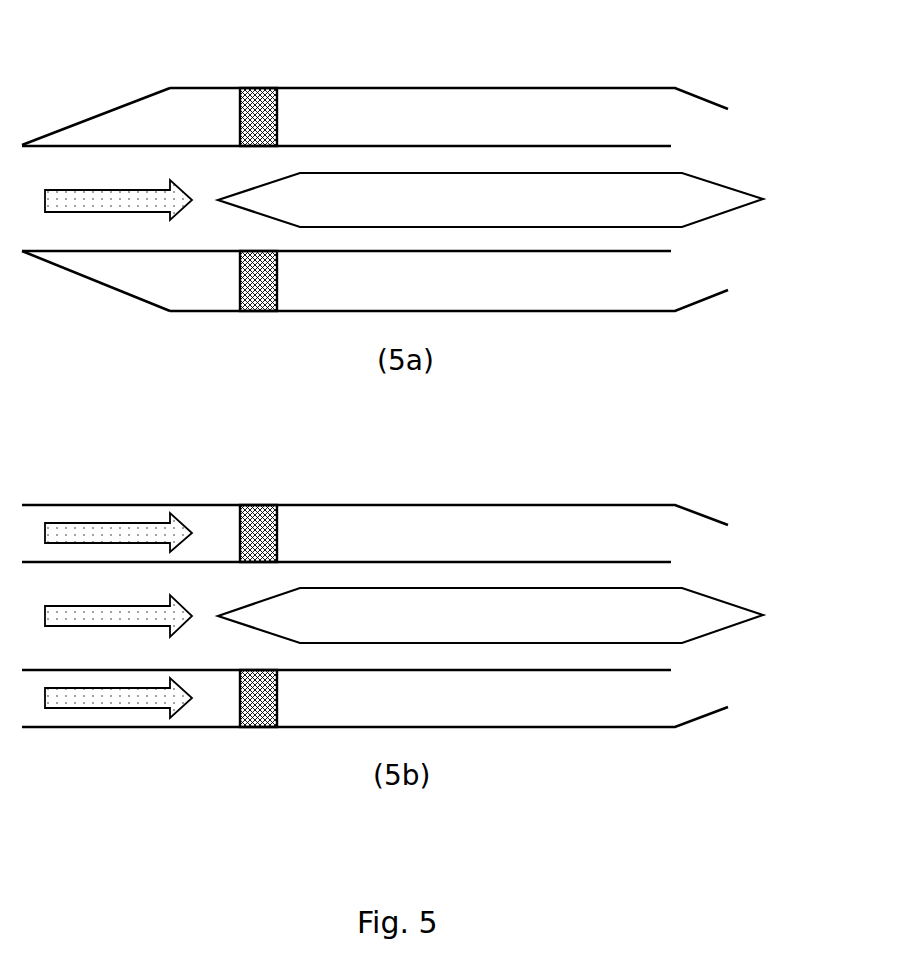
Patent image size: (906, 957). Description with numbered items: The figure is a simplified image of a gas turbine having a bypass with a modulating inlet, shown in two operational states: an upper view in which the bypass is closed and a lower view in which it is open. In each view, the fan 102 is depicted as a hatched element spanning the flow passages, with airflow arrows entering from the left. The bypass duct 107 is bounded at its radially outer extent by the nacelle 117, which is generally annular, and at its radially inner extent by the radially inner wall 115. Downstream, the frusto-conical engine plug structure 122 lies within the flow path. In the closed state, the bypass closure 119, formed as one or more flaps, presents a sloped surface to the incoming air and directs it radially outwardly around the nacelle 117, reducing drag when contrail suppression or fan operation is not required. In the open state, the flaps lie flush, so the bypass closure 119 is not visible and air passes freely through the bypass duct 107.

The fan 102 is at (278, 118).
The bypass duct 107 is at (375, 296).
The radially inner wall 115 is at (640, 138).
The nacelle 117 is at (482, 88).
The bypass closure 119 is at (82, 121).
The engine plug structure 122 is at (723, 183).